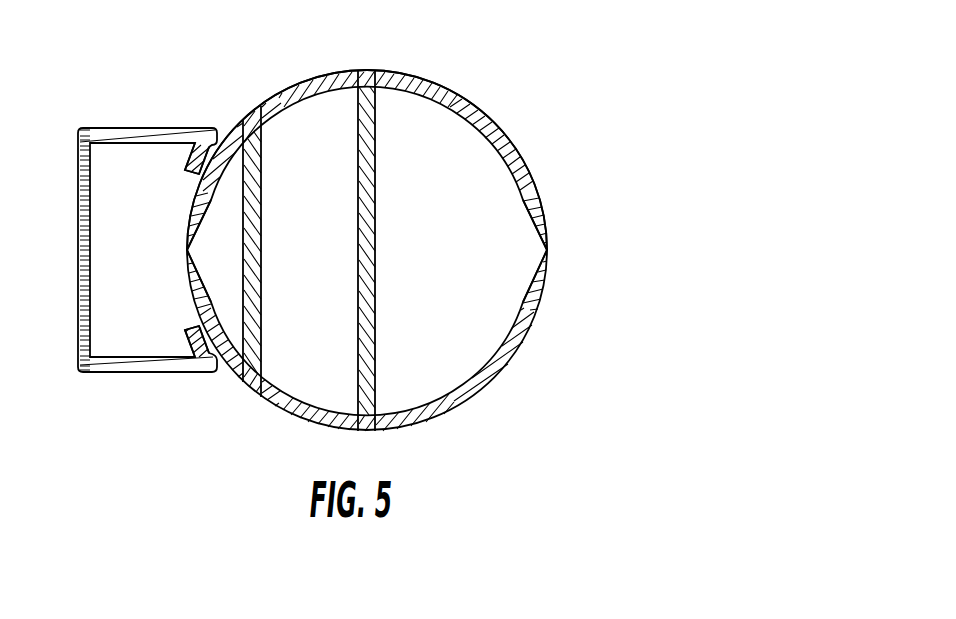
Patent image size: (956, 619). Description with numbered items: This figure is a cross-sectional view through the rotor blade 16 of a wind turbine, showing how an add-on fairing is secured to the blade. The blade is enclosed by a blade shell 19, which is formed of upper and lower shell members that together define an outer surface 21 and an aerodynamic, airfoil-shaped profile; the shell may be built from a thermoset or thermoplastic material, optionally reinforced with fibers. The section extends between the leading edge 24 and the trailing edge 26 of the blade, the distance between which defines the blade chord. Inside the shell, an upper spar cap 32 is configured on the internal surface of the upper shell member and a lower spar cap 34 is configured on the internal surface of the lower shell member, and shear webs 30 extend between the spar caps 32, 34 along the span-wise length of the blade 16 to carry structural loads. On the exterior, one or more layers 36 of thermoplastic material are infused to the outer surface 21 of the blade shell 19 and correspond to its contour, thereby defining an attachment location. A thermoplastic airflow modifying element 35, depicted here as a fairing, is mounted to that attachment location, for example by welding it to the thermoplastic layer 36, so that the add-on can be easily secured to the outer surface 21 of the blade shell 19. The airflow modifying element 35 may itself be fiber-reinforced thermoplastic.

The rotor blade 16 is at (538, 88).
The blade shell 19 is at (426, 73).
The outer surface 21 is at (308, 69).
The leading edge 24 is at (548, 250).
The trailing edge 26 is at (186, 250).
The shear web 30 is at (262, 236).
The upper spar cap 32 is at (262, 132).
The lower spar cap 34 is at (261, 372).
The airflow modifying element 35 is at (151, 124).
The layer of thermoplastic material 36 is at (239, 124).